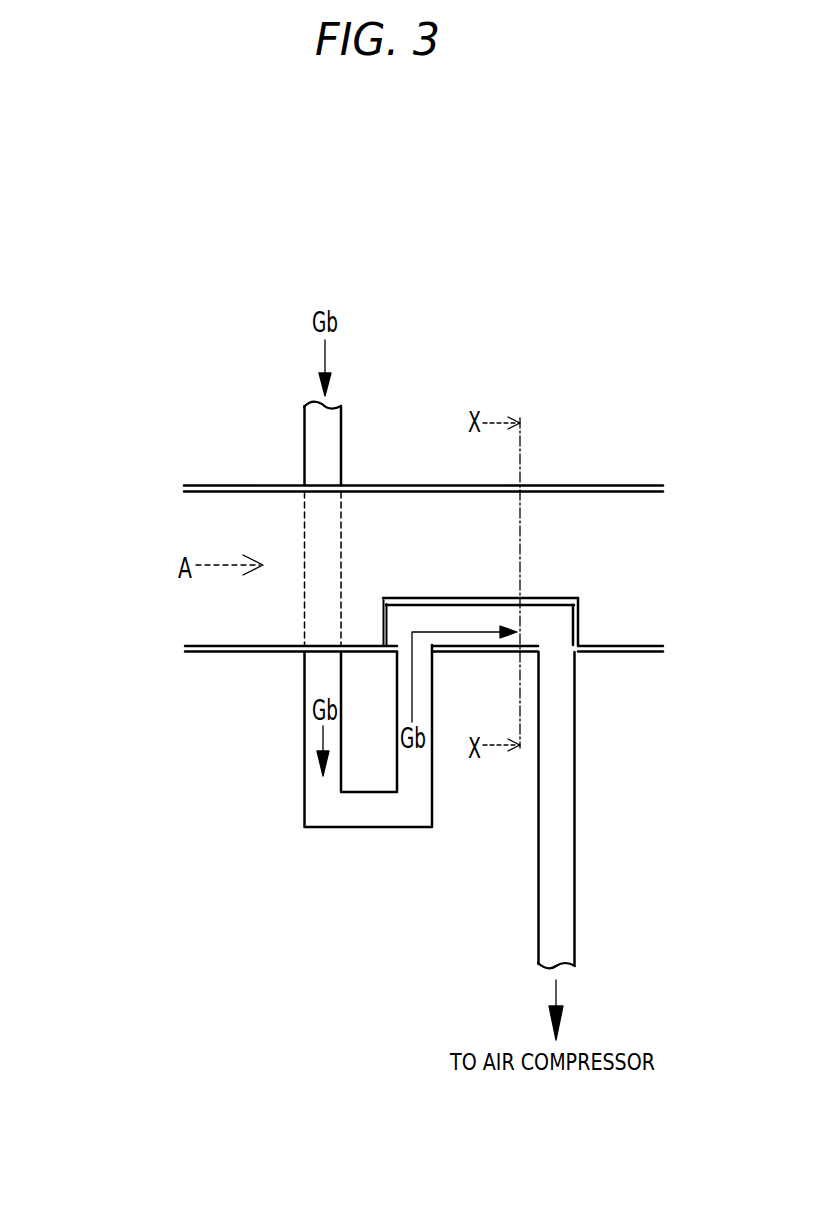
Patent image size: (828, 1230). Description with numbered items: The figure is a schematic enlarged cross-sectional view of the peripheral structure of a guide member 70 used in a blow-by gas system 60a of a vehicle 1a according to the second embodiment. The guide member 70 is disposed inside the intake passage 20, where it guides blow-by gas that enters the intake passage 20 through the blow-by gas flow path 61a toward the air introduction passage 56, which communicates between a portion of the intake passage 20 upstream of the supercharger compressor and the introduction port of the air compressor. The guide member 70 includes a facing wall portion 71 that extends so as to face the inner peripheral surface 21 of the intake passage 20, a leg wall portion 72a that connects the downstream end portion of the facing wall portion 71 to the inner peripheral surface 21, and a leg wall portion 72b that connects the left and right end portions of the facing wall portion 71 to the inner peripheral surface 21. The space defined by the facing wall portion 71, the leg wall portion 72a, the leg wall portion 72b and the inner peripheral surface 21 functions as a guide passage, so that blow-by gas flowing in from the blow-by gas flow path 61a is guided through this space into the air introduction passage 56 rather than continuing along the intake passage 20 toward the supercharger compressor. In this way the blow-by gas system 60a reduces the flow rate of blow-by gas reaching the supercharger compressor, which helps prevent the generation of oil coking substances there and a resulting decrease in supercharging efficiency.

The vehicle 1a is at (117, 214).
The blow-by gas system 60a is at (180, 328).
The blow-by gas flow path 61a is at (304, 431).
The intake passage 20 is at (200, 485).
The inner peripheral surface 21 is at (200, 645).
The guide member 70 is at (507, 583).
The facing wall portion 71 is at (540, 598).
The leg wall portion 72a is at (580, 617).
The leg wall portion 72b is at (383, 626).
The air introduction passage 56 is at (576, 783).